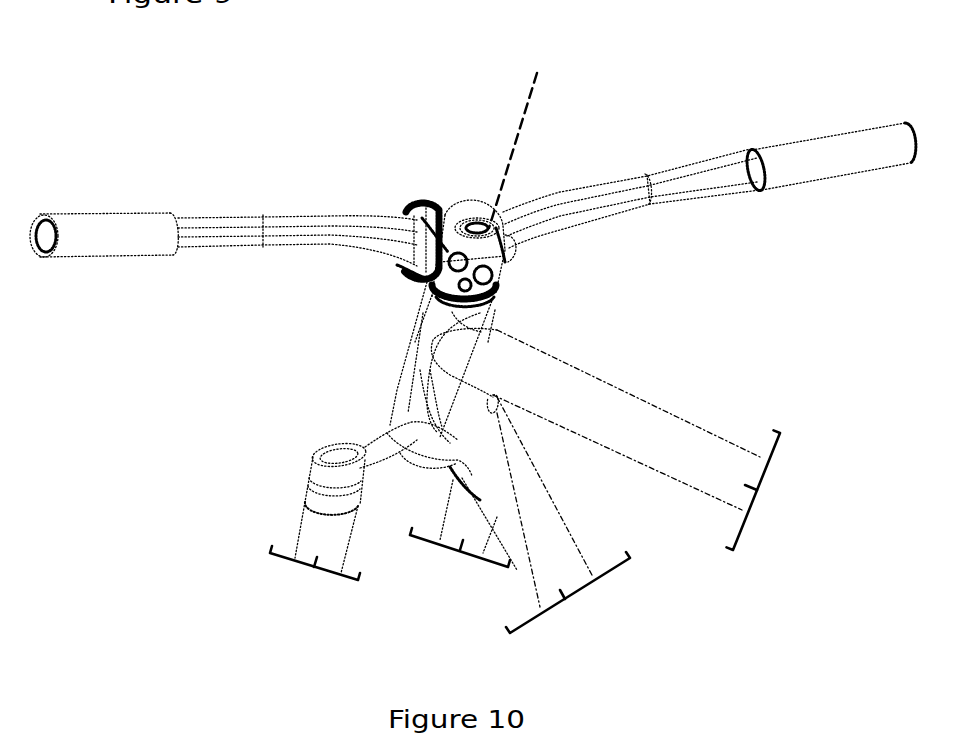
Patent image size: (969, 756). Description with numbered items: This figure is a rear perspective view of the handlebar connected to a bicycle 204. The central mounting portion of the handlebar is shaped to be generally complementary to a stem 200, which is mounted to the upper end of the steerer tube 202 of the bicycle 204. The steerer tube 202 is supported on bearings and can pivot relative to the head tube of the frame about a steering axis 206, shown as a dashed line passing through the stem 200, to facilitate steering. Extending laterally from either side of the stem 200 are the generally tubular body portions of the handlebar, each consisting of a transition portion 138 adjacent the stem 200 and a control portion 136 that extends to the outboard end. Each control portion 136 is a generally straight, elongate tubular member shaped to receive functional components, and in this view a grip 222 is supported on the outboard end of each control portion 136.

The control portion 136 is at (205, 228).
The transition portion 138 is at (393, 227).
The stem 200 is at (440, 180).
The steerer tube 202 is at (417, 376).
The bicycle 204 is at (657, 420).
The steering axis 206 is at (537, 78).
The grip 222 is at (80, 228).